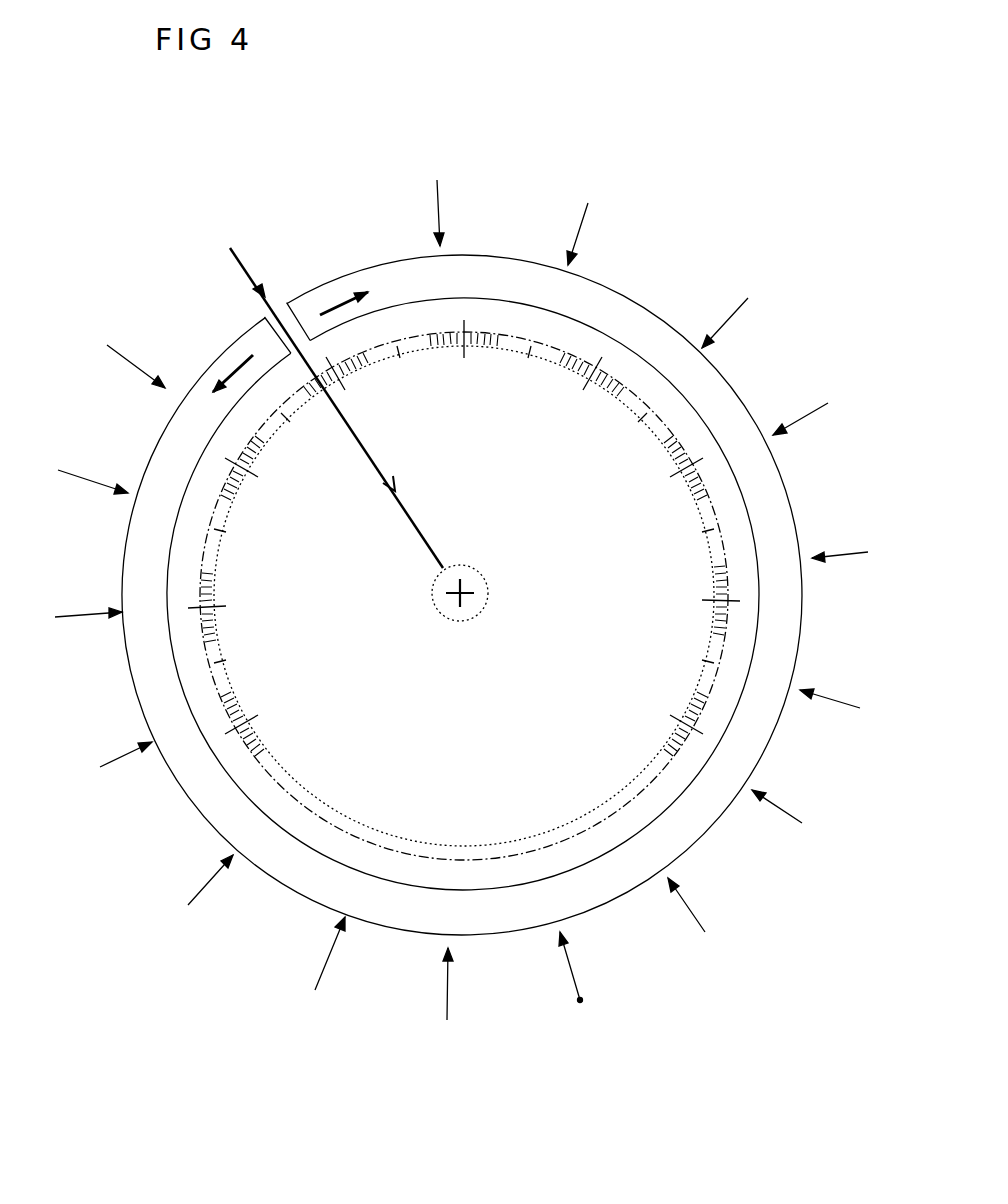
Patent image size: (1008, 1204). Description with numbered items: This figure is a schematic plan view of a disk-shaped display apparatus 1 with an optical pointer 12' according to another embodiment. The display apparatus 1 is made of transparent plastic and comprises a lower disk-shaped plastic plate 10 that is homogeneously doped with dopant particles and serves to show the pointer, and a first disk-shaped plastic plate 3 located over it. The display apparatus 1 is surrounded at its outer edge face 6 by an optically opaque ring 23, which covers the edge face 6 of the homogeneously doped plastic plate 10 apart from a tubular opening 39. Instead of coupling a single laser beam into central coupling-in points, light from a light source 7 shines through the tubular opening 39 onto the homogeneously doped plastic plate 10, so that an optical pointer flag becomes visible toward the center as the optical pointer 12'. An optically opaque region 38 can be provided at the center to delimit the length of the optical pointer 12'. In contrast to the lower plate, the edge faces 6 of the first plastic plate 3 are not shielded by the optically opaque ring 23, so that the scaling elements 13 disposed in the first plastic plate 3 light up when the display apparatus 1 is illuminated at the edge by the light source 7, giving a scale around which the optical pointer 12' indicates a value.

The display apparatus 1 is at (643, 192).
The first disk-shaped plastic plate 3 is at (565, 375).
The outer edge face 6 is at (703, 414).
The light source 7 is at (573, 950).
The homogeneously doped plastic plate 10 is at (452, 308).
The optical pointer 12' is at (338, 408).
The scaling elements 13 is at (677, 473).
The optically opaque ring 23 is at (225, 362).
The optically opaque region 38 is at (483, 567).
The tubular opening 39 is at (297, 315).